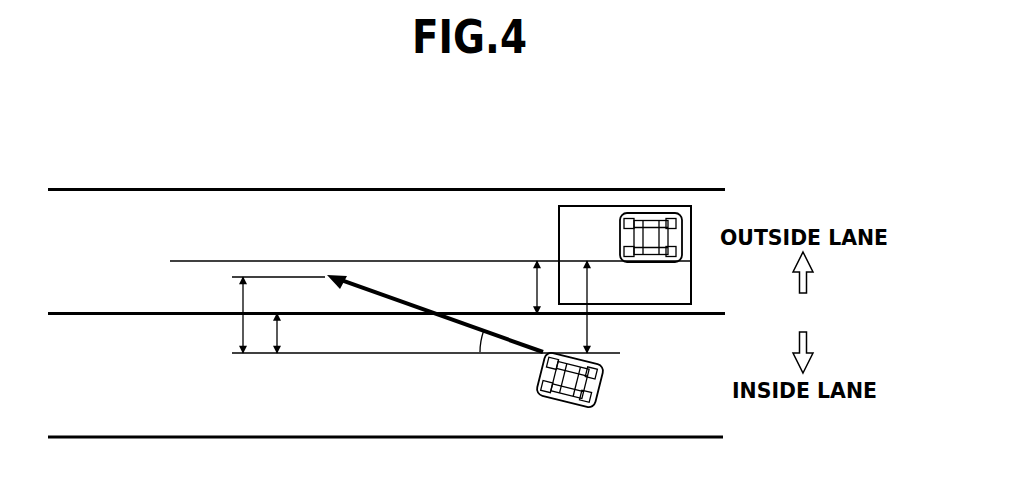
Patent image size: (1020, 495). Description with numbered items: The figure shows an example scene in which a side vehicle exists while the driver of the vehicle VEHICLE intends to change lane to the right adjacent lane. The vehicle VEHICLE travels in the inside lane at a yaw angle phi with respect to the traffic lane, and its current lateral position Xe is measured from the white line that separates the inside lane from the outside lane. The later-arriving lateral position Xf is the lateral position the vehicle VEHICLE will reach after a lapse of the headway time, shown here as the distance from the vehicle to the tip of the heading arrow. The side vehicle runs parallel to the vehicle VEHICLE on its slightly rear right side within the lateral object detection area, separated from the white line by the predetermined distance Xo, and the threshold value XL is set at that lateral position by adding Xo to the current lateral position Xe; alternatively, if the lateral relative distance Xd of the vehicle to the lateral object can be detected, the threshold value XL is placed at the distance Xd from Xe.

The threshold value XL is at (413, 261).
The later-arriving lateral position Xf is at (227, 315).
The current lateral position Xe is at (293, 334).
The distance from white line to lateral object Xo is at (519, 287).
The relative distance Xd is at (606, 307).
The yaw angle phi is at (472, 340).
The vehicle VEHICLE is at (569, 392).